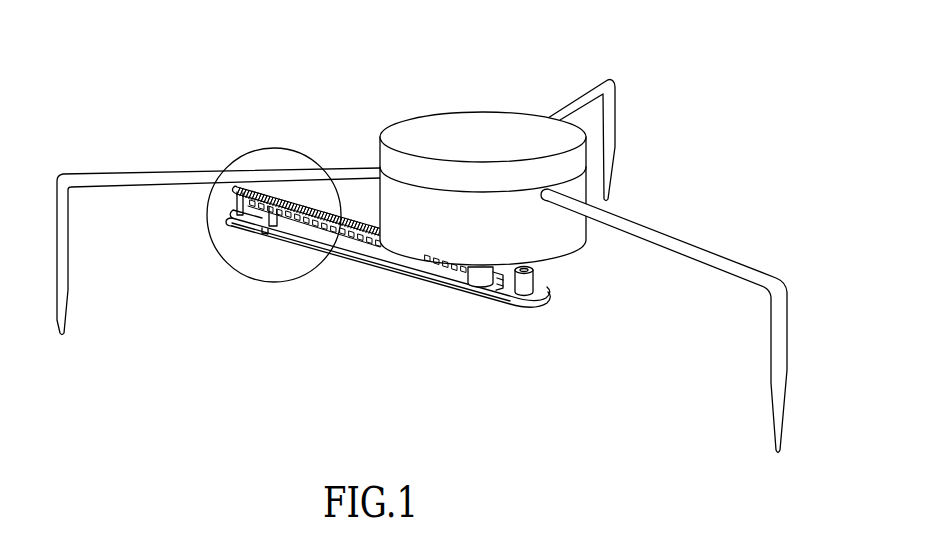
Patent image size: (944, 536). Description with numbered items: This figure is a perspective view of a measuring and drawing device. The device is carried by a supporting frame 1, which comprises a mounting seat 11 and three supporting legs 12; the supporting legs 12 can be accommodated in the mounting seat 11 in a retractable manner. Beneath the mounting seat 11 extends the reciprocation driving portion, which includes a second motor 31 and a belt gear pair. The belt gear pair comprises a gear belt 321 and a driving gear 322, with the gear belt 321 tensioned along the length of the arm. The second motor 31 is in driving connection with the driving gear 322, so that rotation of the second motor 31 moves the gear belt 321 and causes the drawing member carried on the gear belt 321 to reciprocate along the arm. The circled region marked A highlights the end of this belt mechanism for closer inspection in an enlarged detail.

The supporting frame 1 is at (432, 138).
The mounting seat 11 is at (577, 190).
The supporting legs 12 is at (580, 105).
The second motor 31 is at (527, 287).
The gear belt 321 is at (463, 296).
The driving gear 322 is at (503, 297).
The detail area A is at (265, 157).